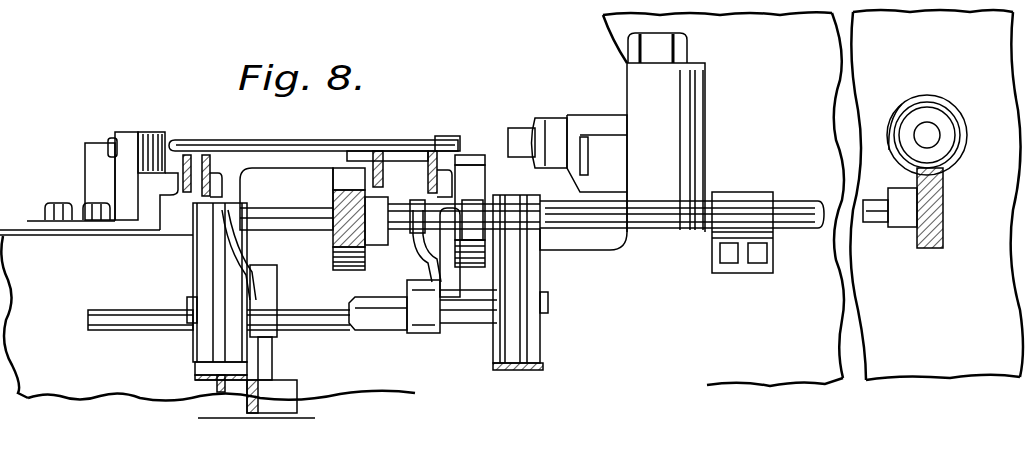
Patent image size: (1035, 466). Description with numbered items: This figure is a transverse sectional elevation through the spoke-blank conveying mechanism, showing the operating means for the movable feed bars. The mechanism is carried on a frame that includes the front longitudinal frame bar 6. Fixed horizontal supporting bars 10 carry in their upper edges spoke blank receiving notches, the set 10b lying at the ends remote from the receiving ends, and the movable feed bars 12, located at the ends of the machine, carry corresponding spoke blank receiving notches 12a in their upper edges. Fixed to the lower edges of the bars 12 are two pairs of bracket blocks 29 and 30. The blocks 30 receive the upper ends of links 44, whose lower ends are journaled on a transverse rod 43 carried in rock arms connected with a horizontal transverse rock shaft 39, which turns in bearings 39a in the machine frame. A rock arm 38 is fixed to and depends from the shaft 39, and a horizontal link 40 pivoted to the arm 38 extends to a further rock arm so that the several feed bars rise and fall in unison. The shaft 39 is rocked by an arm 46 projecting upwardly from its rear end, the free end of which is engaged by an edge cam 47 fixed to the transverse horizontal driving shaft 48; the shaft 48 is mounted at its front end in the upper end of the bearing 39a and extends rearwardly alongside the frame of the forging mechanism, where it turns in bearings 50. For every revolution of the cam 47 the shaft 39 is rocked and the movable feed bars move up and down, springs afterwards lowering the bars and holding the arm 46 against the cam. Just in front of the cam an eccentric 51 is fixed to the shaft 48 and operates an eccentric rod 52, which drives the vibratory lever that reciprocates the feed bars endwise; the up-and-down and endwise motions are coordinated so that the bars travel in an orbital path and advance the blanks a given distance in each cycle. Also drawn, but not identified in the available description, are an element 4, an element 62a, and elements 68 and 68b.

The housing 4 is at (546, 112).
The front longitudinal frame bar 6 is at (215, 381).
The fixed supporting bars 10 is at (189, 194).
The spoke blank receiving notches 10b is at (189, 153).
The movable feed bars 12 is at (215, 168).
The spoke blank receiving notches 12a is at (207, 160).
The bracket blocks 29 is at (268, 181).
The bracket blocks 30 is at (220, 177).
The rock arm 38 is at (278, 360).
The rock shaft 39 is at (338, 302).
The bearings 39a is at (205, 275).
The horizontal link 40 is at (247, 394).
The transverse rod 43 is at (150, 310).
The links 44 is at (253, 272).
The arm 46 is at (462, 325).
The edge cam 47 is at (473, 165).
The driving shaft 48 is at (318, 216).
The bearings 50 is at (606, 232).
The eccentric 51 is at (334, 255).
The eccentric rod 52 is at (351, 268).
The shaft end 62a is at (139, 351).
The pulley 68 is at (940, 112).
The pulley hub 68b is at (945, 185).